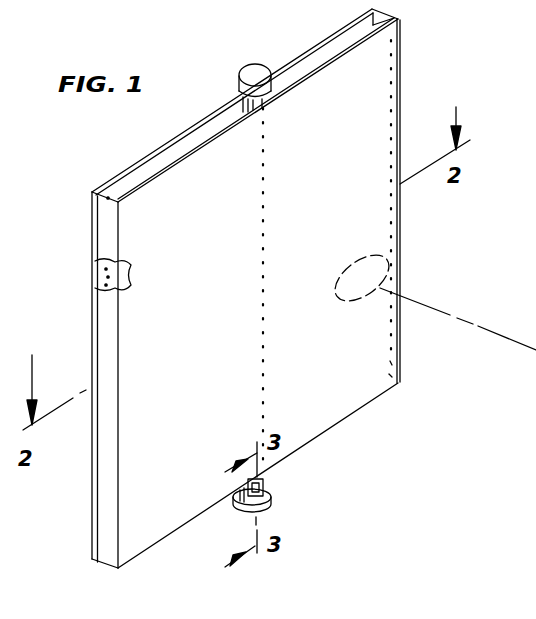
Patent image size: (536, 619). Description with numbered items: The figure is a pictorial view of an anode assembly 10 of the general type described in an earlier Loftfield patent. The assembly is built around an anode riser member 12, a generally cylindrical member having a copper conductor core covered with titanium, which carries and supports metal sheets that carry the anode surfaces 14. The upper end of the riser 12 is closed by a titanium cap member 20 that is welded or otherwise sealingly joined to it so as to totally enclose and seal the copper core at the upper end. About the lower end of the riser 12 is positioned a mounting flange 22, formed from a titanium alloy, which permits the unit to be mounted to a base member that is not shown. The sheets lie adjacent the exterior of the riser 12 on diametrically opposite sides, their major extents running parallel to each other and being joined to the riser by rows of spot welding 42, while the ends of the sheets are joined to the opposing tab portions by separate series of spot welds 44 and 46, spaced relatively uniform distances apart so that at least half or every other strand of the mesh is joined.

The anode assembly 10 is at (289, 288).
The anode riser member 12 is at (249, 74).
The anode surfaces 14 is at (124, 154).
The cap member 20 is at (244, 77).
The mounting flange 22 is at (266, 491).
The rows of spot welding 42 is at (262, 291).
The series of spot welds 44 is at (392, 68).
The series of spot welds 46 is at (97, 202).